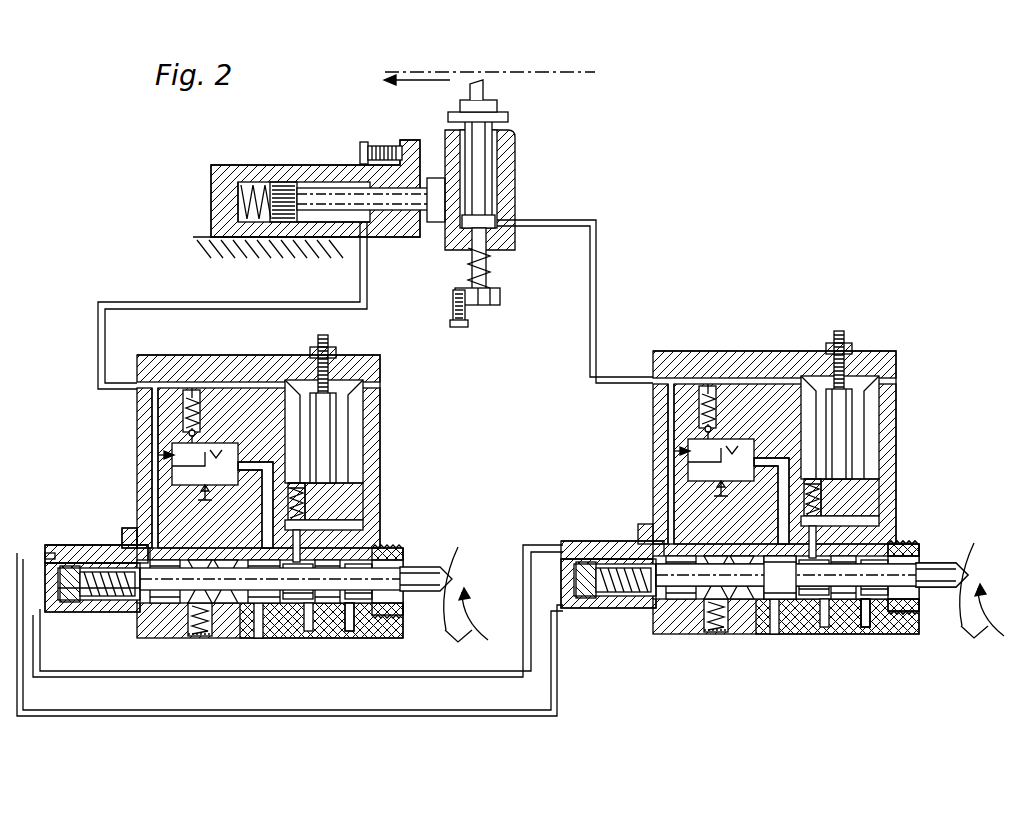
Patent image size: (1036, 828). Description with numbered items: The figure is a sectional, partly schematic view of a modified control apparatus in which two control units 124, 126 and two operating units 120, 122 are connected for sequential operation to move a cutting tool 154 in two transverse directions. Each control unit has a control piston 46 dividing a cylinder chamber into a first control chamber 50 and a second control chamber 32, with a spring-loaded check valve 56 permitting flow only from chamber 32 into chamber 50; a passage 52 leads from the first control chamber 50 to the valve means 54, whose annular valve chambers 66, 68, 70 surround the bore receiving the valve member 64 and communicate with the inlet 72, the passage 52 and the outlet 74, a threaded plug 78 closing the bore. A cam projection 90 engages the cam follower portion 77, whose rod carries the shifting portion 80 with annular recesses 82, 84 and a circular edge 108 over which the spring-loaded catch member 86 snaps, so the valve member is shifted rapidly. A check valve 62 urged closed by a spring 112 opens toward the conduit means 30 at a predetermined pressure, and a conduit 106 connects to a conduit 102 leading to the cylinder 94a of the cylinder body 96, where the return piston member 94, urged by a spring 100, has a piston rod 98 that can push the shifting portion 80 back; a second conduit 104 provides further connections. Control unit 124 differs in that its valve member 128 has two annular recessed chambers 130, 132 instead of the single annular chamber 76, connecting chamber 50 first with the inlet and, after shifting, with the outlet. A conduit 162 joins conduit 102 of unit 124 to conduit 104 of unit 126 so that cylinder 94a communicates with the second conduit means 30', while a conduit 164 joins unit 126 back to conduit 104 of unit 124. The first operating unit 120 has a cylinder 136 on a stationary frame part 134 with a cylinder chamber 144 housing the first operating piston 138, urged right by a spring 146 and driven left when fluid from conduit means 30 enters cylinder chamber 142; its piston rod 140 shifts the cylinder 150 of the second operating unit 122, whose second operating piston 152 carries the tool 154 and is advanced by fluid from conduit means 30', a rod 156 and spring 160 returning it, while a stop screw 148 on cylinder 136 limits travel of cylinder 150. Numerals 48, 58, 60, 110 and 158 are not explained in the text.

The conduit means 30 is at (232, 305).
The second conduit means 30' is at (575, 301).
The second control chamber 32 is at (381, 388).
The control piston 46 is at (355, 500).
The plunger 48 is at (337, 432).
The first control chamber 50 is at (358, 525).
The passage 52 is at (302, 542).
The valve means 54 is at (772, 606).
The spring-loaded check valve 56 is at (303, 488).
The spring 58 is at (308, 500).
The pilot valve 60 is at (158, 455).
The check valve 62 is at (190, 434).
The valve member 64 is at (910, 608).
The annular valve chamber 66 is at (258, 612).
The third annular valve chamber 68 is at (349, 610).
The annular valve chamber 70 is at (386, 612).
The inlet 72 is at (308, 612).
The outlet 74 is at (365, 615).
The annular chamber 76 is at (855, 630).
The cam follower portion 77 is at (420, 576).
The threaded plug 78 is at (940, 590).
The shifting portion 80 is at (132, 545).
The annular recess 82 is at (165, 605).
The annular recess 84 is at (262, 545).
The spring-loaded catch member 86 is at (196, 605).
The projection 90 is at (462, 640).
The return piston member 94 is at (80, 598).
The cylinder 94a is at (110, 600).
The cylinder body 96 is at (38, 554).
The piston rod 98 is at (122, 605).
The spring 100 is at (152, 548).
The conduit 102 is at (112, 605).
The second conduit 104 is at (72, 545).
The conduit 106 is at (155, 430).
The circular edge 108 is at (200, 620).
The threaded bushing 110 is at (400, 606).
The spring 112 is at (184, 412).
The first operating unit 120 is at (208, 155).
The second operating unit 122 is at (524, 147).
The control unit 124 is at (213, 350).
The control unit 126 is at (752, 340).
The valve member 128 is at (232, 603).
The annular recessed chamber 130 is at (326, 605).
The annular recessed chamber 132 is at (404, 610).
The stationary frame part 134 is at (205, 240).
The cylinder 136 is at (213, 178).
The first operating piston 138 is at (285, 182).
The piston rod 140 is at (402, 210).
The cylinder chamber 142 is at (320, 222).
The cylinder chamber 144 is at (244, 222).
The spring 146 is at (245, 182).
The stop screw 148 is at (378, 146).
The cylinder 150 is at (487, 250).
The second operating piston 152 is at (483, 183).
The cutting tool 154 is at (487, 88).
The rod 156 is at (497, 293).
The bolt 158 is at (467, 325).
The spring 160 is at (490, 268).
The conduit 162 is at (176, 672).
The conduit 164 is at (176, 710).